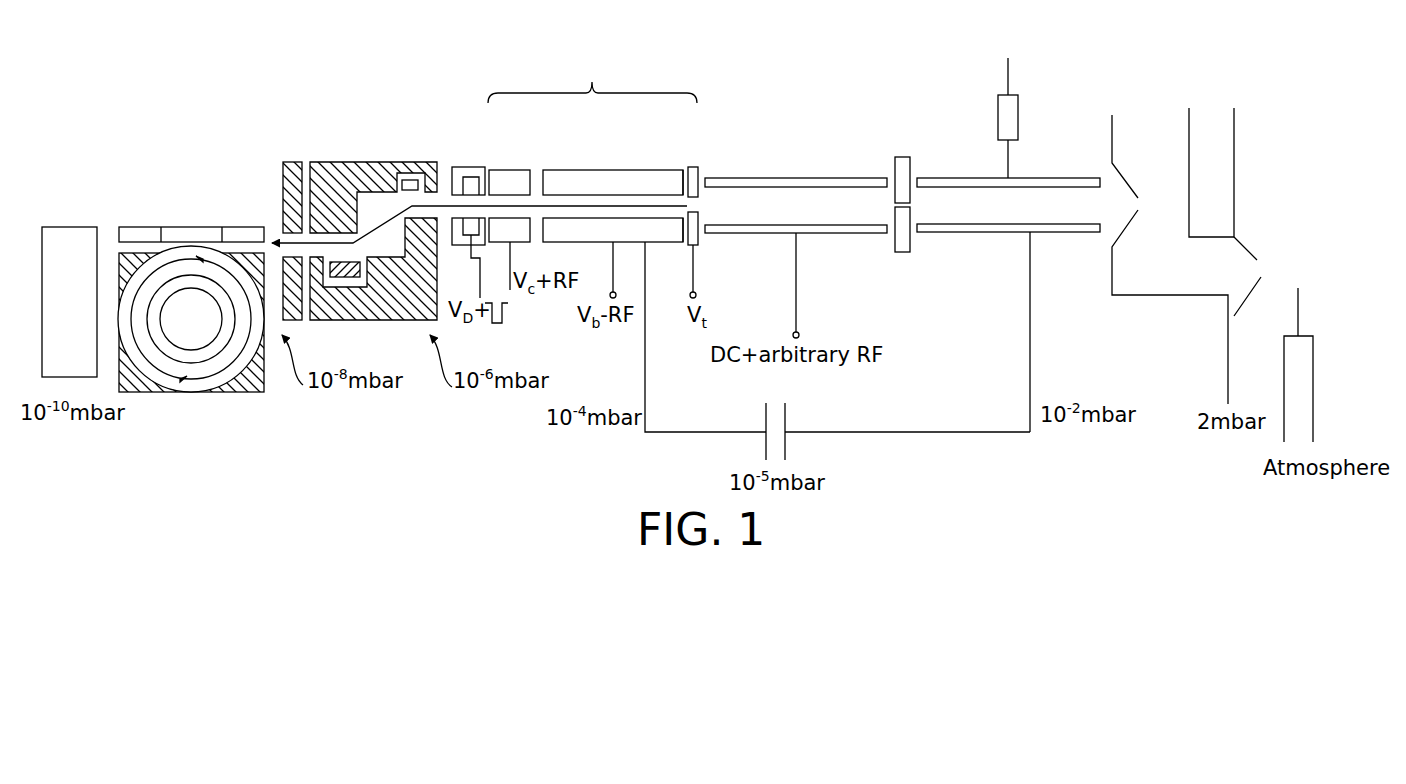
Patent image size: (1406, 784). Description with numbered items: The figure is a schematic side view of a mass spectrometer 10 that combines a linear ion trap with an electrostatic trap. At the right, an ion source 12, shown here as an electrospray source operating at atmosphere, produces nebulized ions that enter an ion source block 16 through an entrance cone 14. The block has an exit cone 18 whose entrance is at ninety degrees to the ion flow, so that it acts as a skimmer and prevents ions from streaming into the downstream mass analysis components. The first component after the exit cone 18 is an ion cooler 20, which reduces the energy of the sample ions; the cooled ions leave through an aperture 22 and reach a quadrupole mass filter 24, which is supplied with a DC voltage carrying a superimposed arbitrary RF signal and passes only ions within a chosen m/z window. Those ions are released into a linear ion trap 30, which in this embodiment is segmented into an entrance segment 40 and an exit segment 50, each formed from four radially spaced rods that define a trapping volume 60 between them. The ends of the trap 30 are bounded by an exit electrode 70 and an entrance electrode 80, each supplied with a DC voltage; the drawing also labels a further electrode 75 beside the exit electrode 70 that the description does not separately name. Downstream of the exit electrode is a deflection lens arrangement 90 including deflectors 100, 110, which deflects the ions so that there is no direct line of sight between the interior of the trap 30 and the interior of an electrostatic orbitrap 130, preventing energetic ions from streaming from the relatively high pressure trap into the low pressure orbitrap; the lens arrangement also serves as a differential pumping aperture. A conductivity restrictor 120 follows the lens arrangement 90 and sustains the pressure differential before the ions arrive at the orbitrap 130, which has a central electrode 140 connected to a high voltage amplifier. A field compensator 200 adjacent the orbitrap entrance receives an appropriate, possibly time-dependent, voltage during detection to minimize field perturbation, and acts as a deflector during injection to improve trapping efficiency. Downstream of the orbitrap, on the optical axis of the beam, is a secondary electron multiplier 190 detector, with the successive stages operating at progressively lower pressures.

The mass spectrometer 10 is at (333, 410).
The ion source 12 is at (1303, 391).
The entrance cone 14 is at (1256, 255).
The ion source block 16 is at (1201, 95).
The exit cone 18 is at (1113, 145).
The ion cooler 20 is at (1063, 182).
The aperture 22 is at (903, 160).
The quadrupole mass filter 24 is at (845, 182).
The linear ion trap 30 is at (592, 80).
The entrance segment 40 is at (665, 178).
The exit segment 50 is at (520, 177).
The trapping volume 60 is at (600, 203).
The exit electrode 70 is at (480, 167).
The deflector electrode 75 is at (460, 177).
The entrance electrode 80 is at (698, 168).
The deflection lens arrangement 90 is at (358, 167).
The deflector 100 is at (413, 180).
The deflector 110 is at (348, 278).
The conductivity restrictor 120 is at (293, 162).
The electrostatic orbitrap 130 is at (171, 257).
The central electrode 140 is at (193, 323).
The secondary electron multiplier 190 is at (70, 240).
The field compensator 200 is at (197, 223).